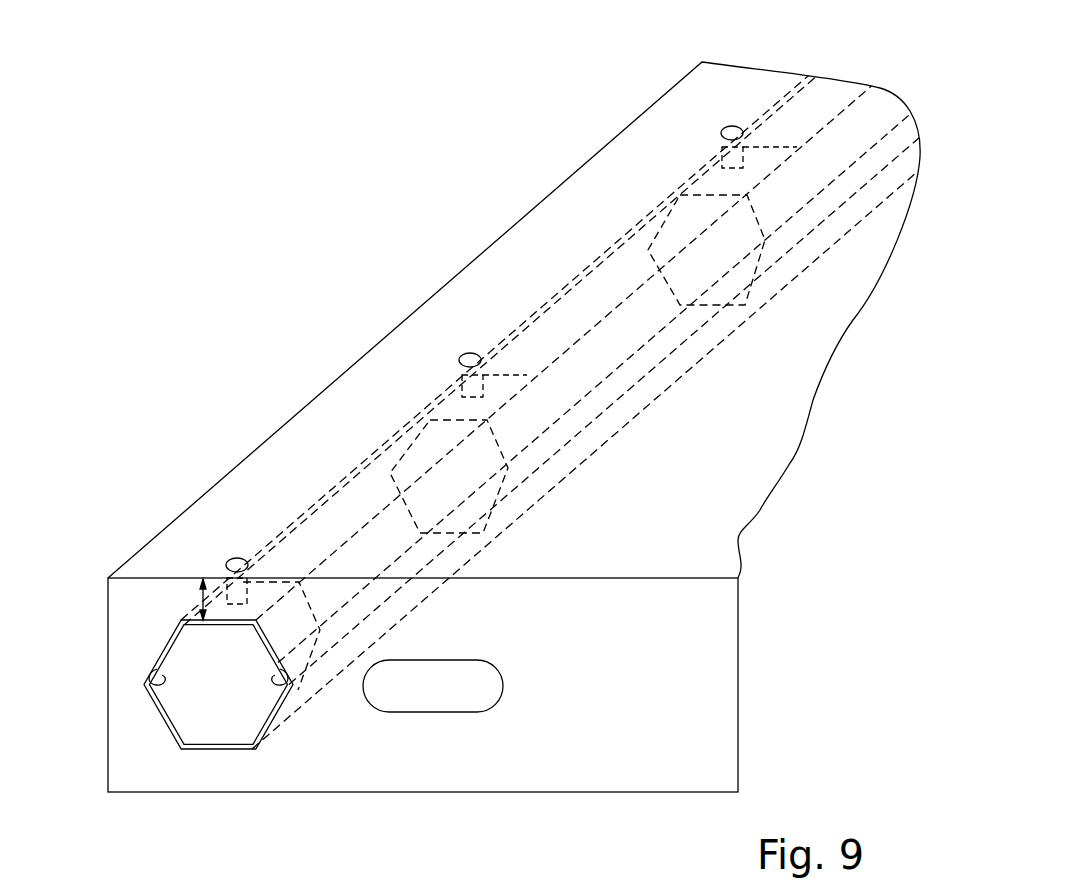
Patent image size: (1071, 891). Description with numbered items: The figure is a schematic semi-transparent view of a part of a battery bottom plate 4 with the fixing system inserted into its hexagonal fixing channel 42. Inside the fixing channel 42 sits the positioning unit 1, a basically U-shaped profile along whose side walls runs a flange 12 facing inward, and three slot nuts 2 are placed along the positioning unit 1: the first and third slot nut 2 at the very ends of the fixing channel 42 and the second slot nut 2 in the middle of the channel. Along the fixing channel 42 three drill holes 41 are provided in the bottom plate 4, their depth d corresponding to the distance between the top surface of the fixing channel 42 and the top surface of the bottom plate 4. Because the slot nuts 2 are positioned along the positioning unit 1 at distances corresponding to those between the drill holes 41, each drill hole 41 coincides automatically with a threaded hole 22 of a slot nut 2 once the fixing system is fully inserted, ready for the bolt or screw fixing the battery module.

The positioning unit 1 is at (155, 718).
The flange 12 is at (358, 616).
The slot nut 2 is at (733, 253).
The threaded hole 22 is at (743, 168).
The bottom plate 4 is at (514, 427).
The drill hole 41 is at (726, 126).
The fixing channel 42 is at (342, 521).
The depth of the drill holes d is at (203, 584).